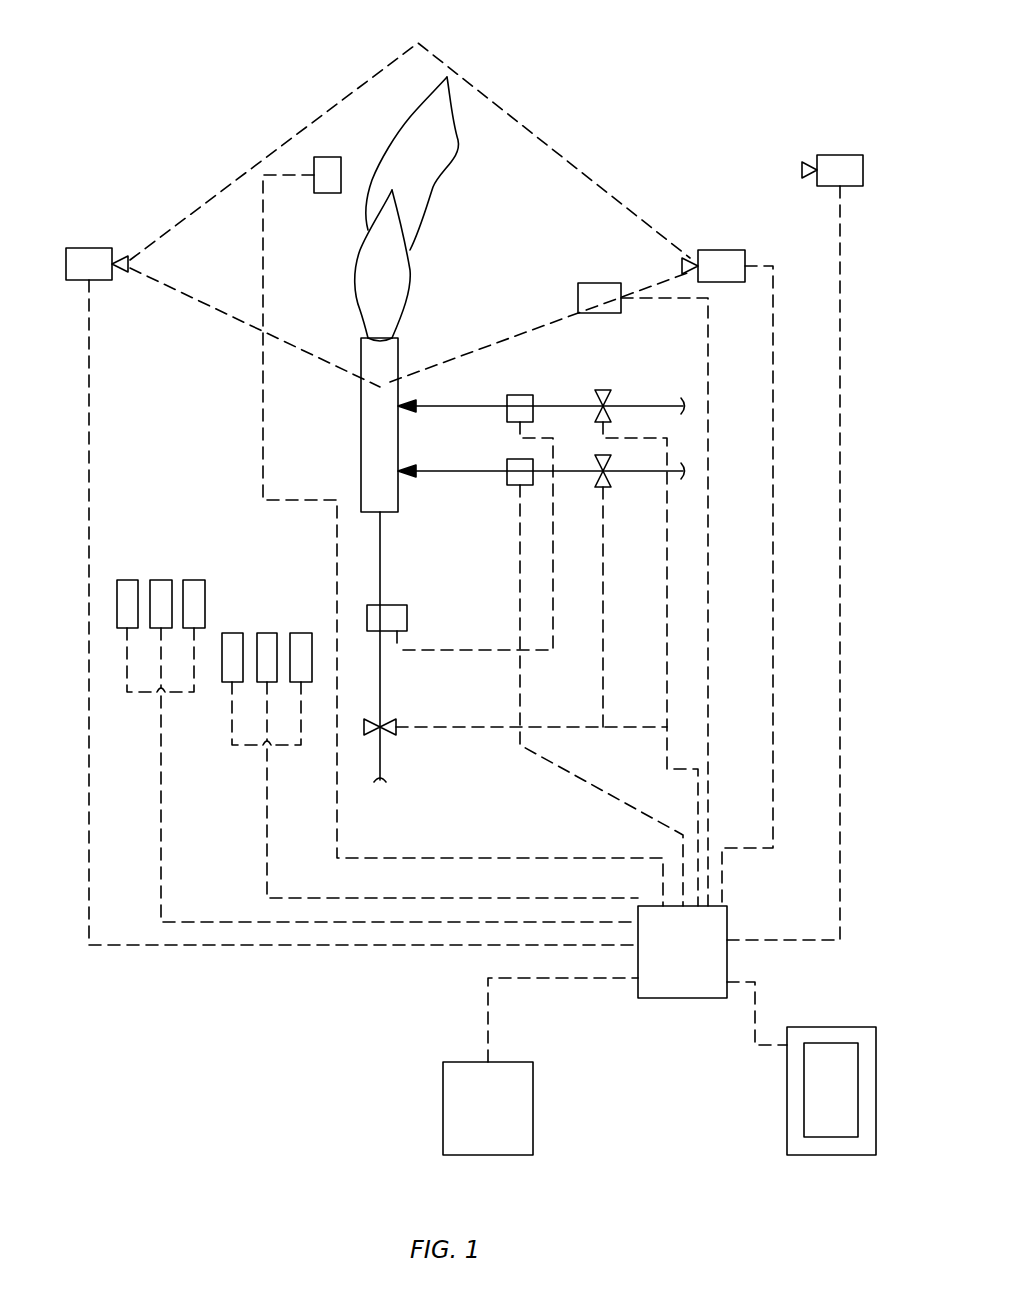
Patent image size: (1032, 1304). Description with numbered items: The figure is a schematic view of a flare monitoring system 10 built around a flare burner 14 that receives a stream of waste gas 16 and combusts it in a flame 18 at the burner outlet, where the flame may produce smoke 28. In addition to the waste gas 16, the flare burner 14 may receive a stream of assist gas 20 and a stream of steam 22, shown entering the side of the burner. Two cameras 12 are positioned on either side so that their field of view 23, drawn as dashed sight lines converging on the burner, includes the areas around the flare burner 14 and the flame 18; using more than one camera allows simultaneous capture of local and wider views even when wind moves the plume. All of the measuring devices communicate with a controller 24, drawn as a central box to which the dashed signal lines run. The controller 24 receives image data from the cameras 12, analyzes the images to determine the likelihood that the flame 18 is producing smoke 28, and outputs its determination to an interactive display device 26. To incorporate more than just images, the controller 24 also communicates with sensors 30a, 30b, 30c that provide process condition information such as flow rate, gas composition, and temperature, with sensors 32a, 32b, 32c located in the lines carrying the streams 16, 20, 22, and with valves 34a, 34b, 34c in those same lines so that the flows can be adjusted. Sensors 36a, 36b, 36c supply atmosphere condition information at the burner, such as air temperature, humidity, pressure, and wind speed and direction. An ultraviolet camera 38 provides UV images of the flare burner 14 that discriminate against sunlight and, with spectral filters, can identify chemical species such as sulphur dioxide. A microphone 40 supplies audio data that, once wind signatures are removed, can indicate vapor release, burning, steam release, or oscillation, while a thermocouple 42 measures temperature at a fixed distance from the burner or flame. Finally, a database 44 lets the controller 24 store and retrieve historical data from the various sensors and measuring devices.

The system 10 is at (841, 82).
The camera 12 is at (85, 248).
The flare burner 14 is at (361, 425).
The stream of waste gas 16 is at (382, 688).
The flame 18 is at (404, 282).
The stream of assist gas 20 is at (438, 476).
The stream of steam 22 is at (440, 412).
The field of view 23 is at (232, 197).
The controller 24 is at (727, 964).
The display device 26 is at (862, 1027).
The smoke 28 is at (433, 187).
The sensor 30a is at (232, 633).
The sensor 30b is at (267, 633).
The sensor 30c is at (301, 633).
The sensor 32a is at (407, 616).
The sensor 32b is at (527, 459).
The sensor 32c is at (520, 395).
The valve 34a is at (396, 731).
The valve 34b is at (607, 487).
The valve 34c is at (605, 390).
The sensor 36a is at (127, 580).
The sensor 36b is at (161, 580).
The sensor 36c is at (194, 580).
The ultraviolet camera 38 is at (840, 155).
The microphone 40 is at (590, 283).
The thermocouple 42 is at (327, 157).
The database 44 is at (455, 1062).